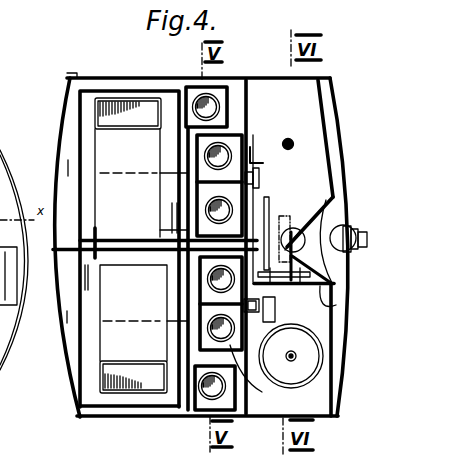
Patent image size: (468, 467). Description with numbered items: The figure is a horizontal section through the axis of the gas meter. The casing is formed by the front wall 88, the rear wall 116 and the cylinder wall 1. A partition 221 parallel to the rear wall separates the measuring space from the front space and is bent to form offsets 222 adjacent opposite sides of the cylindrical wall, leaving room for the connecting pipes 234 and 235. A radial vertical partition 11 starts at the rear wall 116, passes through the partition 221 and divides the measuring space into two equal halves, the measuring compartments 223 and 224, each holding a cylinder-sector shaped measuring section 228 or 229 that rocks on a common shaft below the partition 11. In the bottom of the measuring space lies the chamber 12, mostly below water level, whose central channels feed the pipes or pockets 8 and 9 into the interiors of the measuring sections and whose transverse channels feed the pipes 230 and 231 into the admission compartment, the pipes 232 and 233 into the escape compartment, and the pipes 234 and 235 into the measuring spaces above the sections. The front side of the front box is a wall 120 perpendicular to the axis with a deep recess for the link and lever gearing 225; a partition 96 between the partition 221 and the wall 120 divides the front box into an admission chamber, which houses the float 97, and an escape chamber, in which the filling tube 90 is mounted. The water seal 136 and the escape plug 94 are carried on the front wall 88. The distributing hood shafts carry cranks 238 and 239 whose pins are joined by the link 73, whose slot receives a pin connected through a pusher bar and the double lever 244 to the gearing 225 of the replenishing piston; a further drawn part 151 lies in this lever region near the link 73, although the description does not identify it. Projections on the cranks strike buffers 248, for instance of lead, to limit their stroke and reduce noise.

The cylinder wall 1 is at (97, 74).
The pipe or duct 8 is at (128, 113).
The pipe or duct 9 is at (133, 377).
The radial vertical partition 11 is at (118, 234).
The chamber 12 is at (120, 262).
The link 73 is at (280, 224).
The front wall 88 is at (337, 122).
The filling tube 90 is at (294, 143).
The escape plug 94 is at (363, 238).
The partition 96 is at (334, 308).
The float 97 is at (291, 356).
The rear wall 116 is at (65, 361).
The wall 120 is at (316, 109).
The water seal 136 is at (334, 267).
The pivot lever 151 is at (282, 218).
The partition 221 is at (192, 135).
The offsets 222 is at (232, 80).
The measuring chamber 223 is at (67, 317).
The measuring compartment 224 is at (68, 168).
The link and lever gearing 225 is at (303, 242).
The measuring section 228 is at (108, 410).
The measuring section 229 is at (125, 89).
The pipe 230 is at (200, 280).
The pipe 231 is at (257, 375).
The pipe 232 is at (200, 197).
The pipe 233 is at (223, 144).
The pipe 234 is at (207, 396).
The pipe 235 is at (200, 93).
The crank 238 is at (272, 318).
The crank 239 is at (262, 176).
The double lever 244 is at (294, 286).
The buffers 248 is at (251, 148).